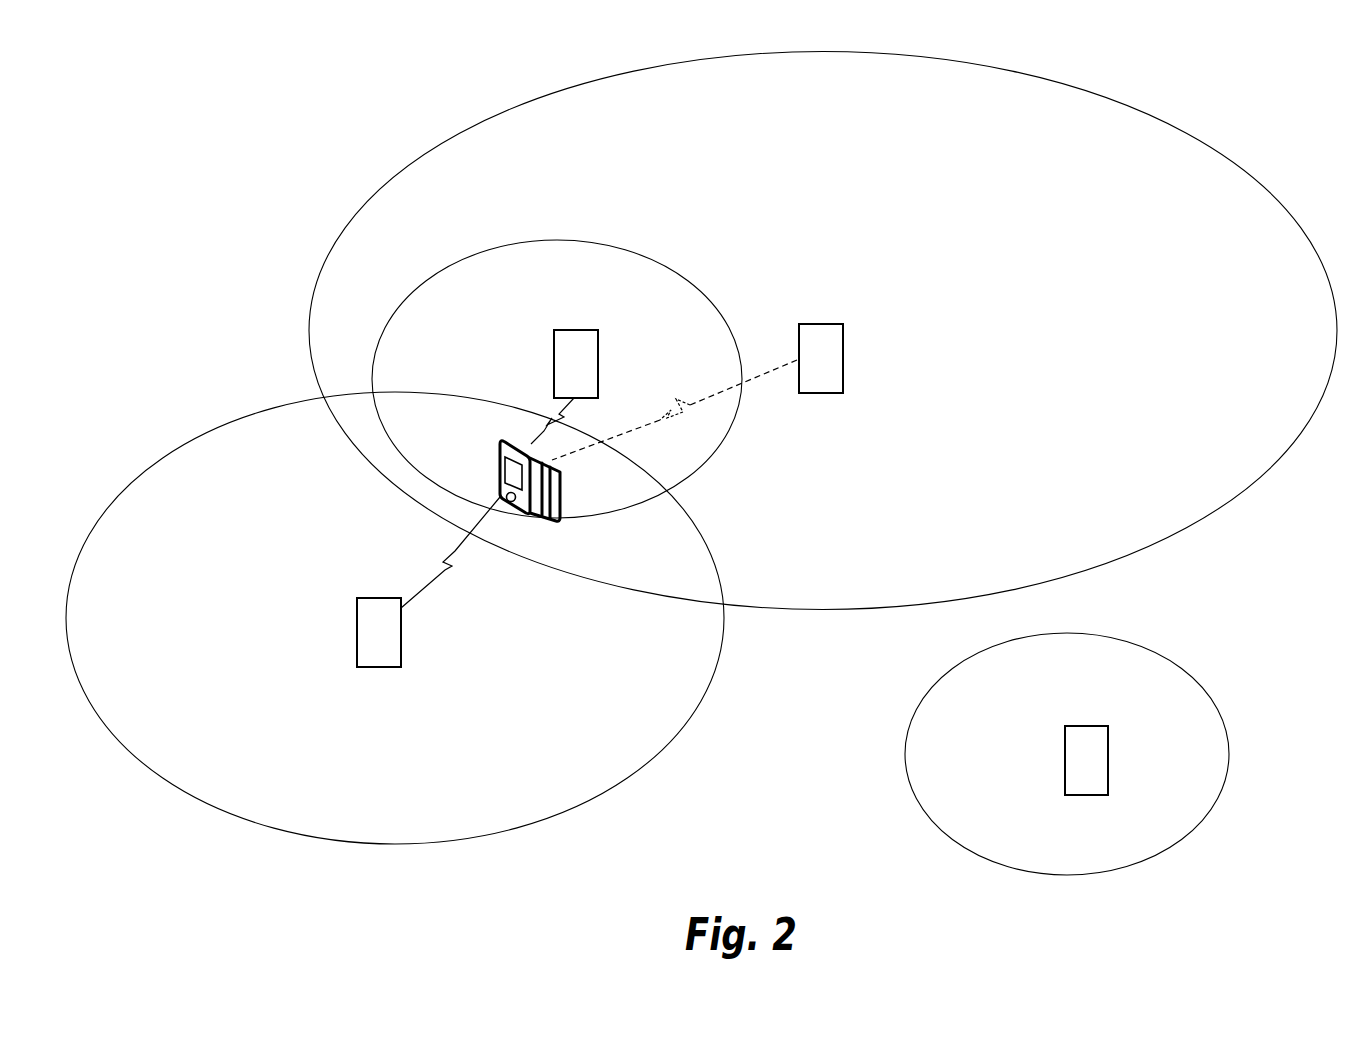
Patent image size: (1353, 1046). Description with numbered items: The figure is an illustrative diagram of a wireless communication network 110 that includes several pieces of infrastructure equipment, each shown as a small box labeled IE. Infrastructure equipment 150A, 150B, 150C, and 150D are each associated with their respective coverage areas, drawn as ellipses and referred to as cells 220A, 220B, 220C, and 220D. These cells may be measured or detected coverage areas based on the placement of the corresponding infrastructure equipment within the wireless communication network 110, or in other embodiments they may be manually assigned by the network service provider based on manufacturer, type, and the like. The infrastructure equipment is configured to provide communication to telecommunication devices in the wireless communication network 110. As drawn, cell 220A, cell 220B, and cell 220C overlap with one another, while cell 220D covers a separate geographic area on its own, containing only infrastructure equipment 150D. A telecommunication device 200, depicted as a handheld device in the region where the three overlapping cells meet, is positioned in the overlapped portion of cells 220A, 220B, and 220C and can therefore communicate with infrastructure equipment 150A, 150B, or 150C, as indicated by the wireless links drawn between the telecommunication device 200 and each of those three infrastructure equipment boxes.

The wireless communication network 110 is at (366, 109).
The infrastructure equipment 150A is at (357, 610).
The infrastructure equipment 150B is at (554, 358).
The infrastructure equipment 150C is at (843, 360).
The infrastructure equipment 150D is at (1065, 746).
The telecommunication device 200 is at (500, 442).
The cell 220A is at (197, 438).
The cell 220B is at (697, 467).
The cell 220C is at (1140, 552).
The cell 220D is at (922, 702).